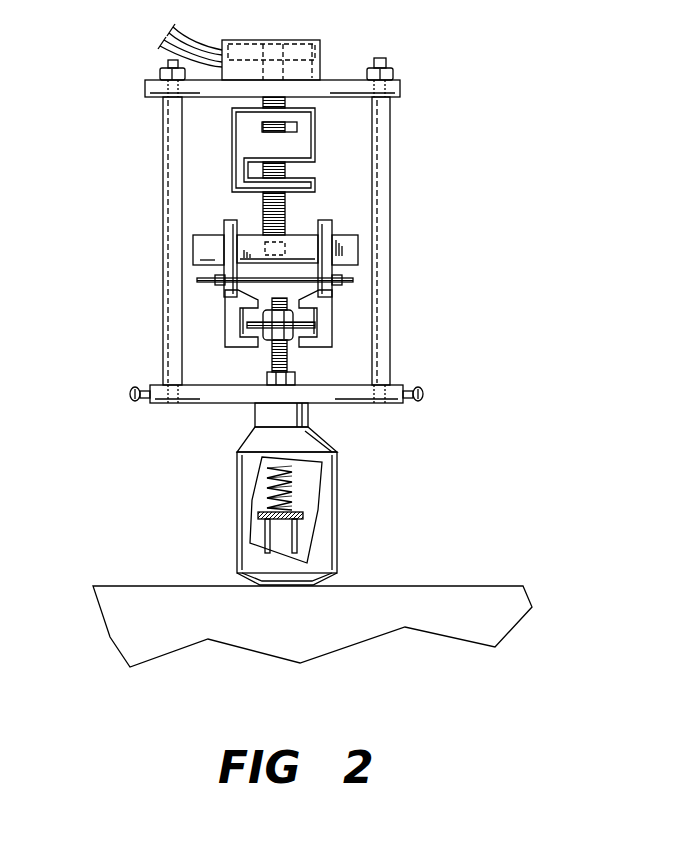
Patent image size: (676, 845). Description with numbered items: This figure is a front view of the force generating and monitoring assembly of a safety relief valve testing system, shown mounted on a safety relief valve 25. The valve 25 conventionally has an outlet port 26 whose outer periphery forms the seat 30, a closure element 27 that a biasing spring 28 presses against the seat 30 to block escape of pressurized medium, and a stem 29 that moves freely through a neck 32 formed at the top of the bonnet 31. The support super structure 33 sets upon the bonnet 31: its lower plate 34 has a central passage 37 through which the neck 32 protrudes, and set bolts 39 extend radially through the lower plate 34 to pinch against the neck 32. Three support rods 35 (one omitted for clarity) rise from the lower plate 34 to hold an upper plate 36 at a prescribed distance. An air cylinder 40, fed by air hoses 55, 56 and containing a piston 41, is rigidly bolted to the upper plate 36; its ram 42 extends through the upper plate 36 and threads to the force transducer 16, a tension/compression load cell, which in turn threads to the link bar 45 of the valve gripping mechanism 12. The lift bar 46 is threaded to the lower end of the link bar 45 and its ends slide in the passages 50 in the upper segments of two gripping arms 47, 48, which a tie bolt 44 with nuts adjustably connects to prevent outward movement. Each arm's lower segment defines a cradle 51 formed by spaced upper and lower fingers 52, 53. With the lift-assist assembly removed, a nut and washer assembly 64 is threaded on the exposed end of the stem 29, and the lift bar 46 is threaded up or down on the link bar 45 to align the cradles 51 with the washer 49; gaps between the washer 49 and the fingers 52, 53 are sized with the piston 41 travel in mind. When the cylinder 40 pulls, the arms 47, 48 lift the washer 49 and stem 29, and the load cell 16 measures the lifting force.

The valve gripping mechanism 12 is at (362, 277).
The force transducer 16 is at (230, 159).
The safety relief valve 25 is at (341, 512).
The outlet port 26 is at (305, 528).
The closure element 27 is at (262, 513).
The biasing spring 28 is at (266, 484).
The valve stem 29 is at (290, 356).
The seat 30 is at (294, 534).
The bonnet 31 is at (320, 438).
The neck 32 is at (256, 404).
The support super structure 33 is at (405, 165).
The lower plate 34 is at (150, 386).
The support rods 35 is at (378, 150).
The upper plate 36 is at (400, 88).
The central passage 37 is at (310, 379).
The set bolts 39 is at (137, 401).
The air cylinder 40 is at (324, 48).
The air cylinder piston 41 is at (312, 44).
The ram 42 is at (263, 44).
The tie bolt 44 is at (197, 279).
The link bar 45 is at (287, 212).
The lift bar 46 is at (352, 252).
The gripping arm 47 is at (226, 222).
The gripping arm 48 is at (312, 305).
The washer 49 is at (263, 325).
The passage 50 is at (221, 232).
The cradle 51 is at (247, 323).
The upper finger 52 is at (240, 300).
The lower finger 53 is at (240, 343).
The air hose 55 is at (166, 64).
The air hose 56 is at (180, 29).
The nut and washer assembly 64 is at (264, 346).